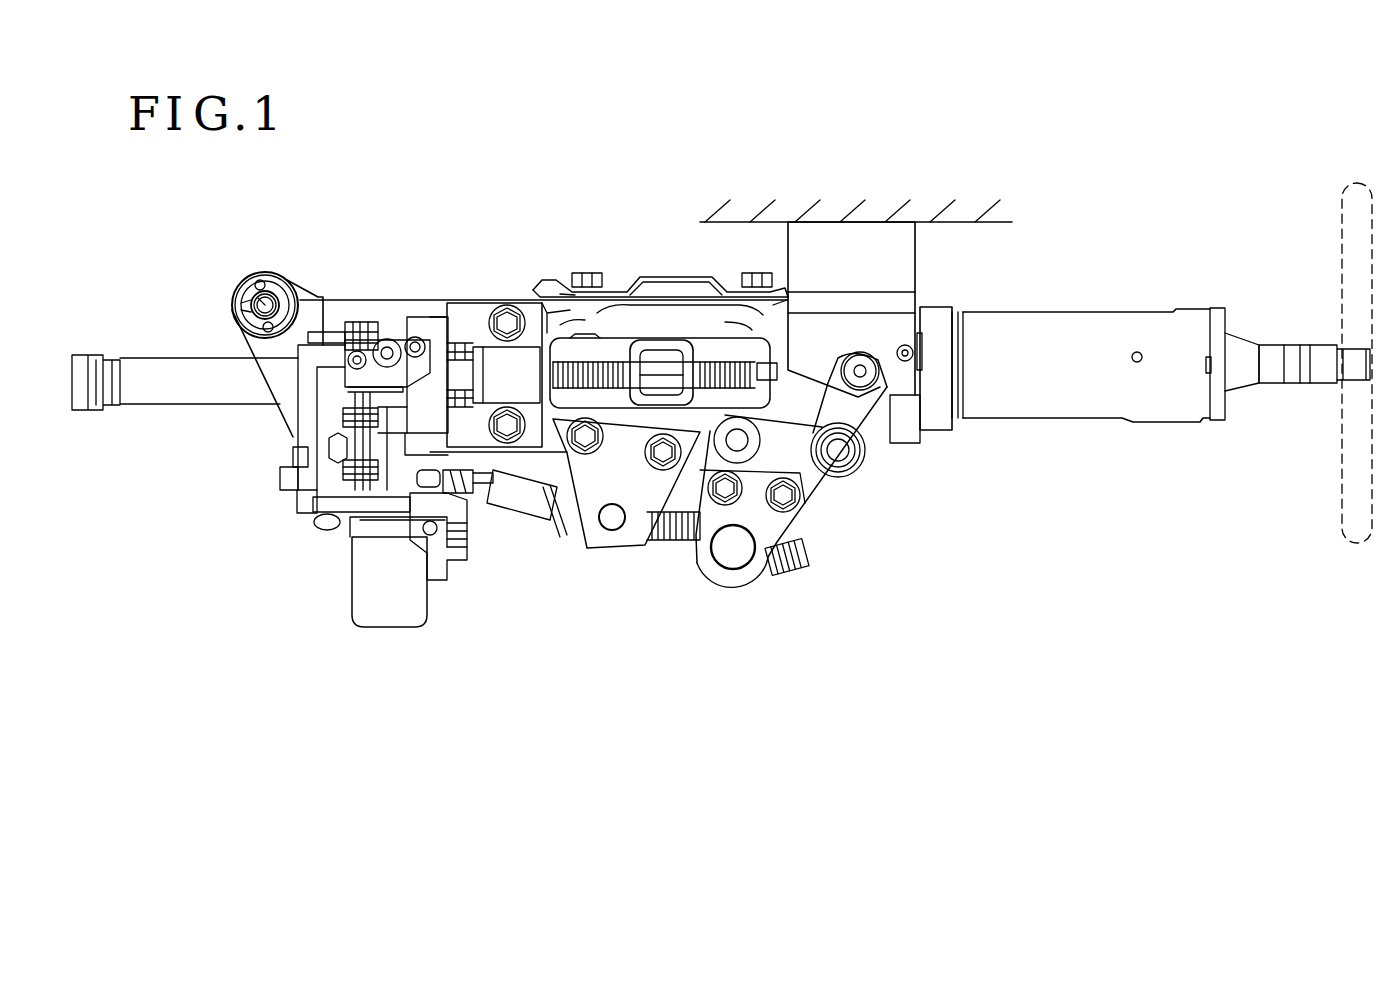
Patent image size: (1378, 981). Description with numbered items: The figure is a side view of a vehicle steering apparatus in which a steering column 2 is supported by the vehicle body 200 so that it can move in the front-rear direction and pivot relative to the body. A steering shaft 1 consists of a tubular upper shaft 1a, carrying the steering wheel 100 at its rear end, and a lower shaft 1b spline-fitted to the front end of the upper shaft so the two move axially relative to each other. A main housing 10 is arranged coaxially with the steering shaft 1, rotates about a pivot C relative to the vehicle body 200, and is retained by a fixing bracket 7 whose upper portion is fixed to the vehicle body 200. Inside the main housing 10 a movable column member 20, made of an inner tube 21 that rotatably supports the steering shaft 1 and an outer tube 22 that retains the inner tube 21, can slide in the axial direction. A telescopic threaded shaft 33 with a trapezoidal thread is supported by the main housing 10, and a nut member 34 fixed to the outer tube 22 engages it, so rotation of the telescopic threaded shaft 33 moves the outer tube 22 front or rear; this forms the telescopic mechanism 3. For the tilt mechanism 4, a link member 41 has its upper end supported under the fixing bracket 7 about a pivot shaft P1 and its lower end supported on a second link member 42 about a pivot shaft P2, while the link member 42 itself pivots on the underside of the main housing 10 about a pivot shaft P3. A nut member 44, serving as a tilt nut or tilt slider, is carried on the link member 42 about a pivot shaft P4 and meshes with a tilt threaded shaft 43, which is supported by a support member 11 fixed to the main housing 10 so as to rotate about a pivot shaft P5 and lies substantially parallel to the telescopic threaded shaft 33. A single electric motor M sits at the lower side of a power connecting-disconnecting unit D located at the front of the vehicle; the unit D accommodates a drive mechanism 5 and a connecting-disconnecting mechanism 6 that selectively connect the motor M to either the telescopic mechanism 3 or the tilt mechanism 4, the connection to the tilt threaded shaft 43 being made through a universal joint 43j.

The steering shaft 1 is at (1243, 324).
The upper shaft 1a is at (1290, 385).
The lower shaft 1b is at (196, 393).
The steering column 2 is at (990, 297).
The telescopic mechanism 3 is at (608, 350).
The tilt mechanism 4 is at (878, 532).
The drive mechanism 5 is at (455, 500).
The connecting-disconnecting mechanism 6 is at (326, 532).
The fixing bracket 7 is at (850, 242).
The main housing 10 is at (413, 293).
The support member 11 is at (578, 495).
The movable column member 20 is at (1036, 298).
The inner tube 21 is at (1058, 400).
The outer tube 22 is at (932, 312).
The telescopic threaded shaft 33 is at (722, 358).
The nut member 34 is at (677, 355).
The link member 41 is at (873, 440).
The link member 42 is at (825, 490).
The tilt threaded shaft 43 is at (668, 540).
The universal joint 43j is at (451, 499).
The nut member 44 is at (770, 552).
The steering wheel 100 is at (1352, 179).
The vehicle body 200 is at (975, 212).
The pivot C is at (248, 282).
The power connecting-disconnecting unit D is at (283, 512).
The electric motor M is at (405, 600).
The pivot shaft P1 is at (862, 372).
The pivot shaft P2 is at (838, 452).
The pivot shaft P3 is at (737, 443).
The pivot shaft P4 is at (733, 547).
The pivot shaft P5 is at (612, 517).